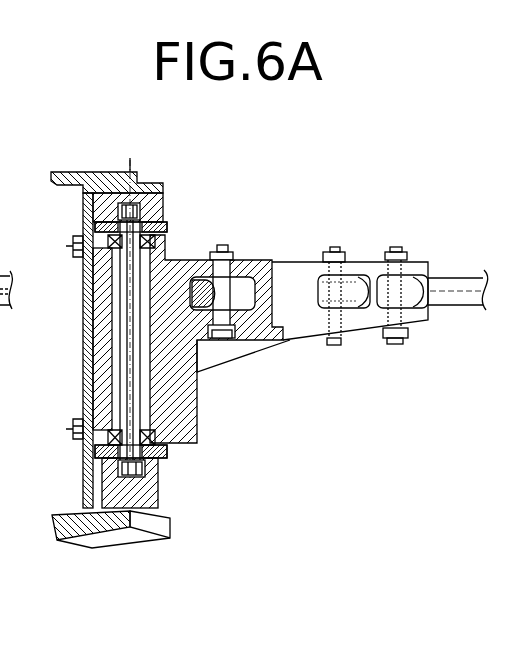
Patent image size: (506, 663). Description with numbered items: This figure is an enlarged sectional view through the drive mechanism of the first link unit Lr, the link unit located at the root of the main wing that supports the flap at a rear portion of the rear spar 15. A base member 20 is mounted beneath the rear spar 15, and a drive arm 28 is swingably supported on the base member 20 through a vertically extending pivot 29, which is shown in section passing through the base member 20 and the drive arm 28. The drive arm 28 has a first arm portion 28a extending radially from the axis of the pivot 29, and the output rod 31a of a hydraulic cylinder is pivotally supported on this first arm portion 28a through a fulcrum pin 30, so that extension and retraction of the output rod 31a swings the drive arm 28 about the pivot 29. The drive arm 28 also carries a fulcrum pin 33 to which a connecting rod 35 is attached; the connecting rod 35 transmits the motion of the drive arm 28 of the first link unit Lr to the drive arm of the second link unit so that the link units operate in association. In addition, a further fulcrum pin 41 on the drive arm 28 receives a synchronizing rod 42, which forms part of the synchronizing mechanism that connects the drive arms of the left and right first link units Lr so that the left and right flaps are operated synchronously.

The rear spar 15 is at (76, 183).
The base member 20 is at (153, 490).
The drive arm 28 is at (259, 252).
The first arm portion 28a is at (292, 270).
The pivot 29 is at (127, 330).
The fulcrum pin 30 is at (331, 346).
The output rod 31a is at (347, 287).
The fulcrum pin 33 is at (223, 340).
The connecting rod 35 is at (188, 262).
The fulcrum pin 41 is at (393, 345).
The synchronizing rod 42 is at (447, 283).
The first link unit Lr is at (243, 414).